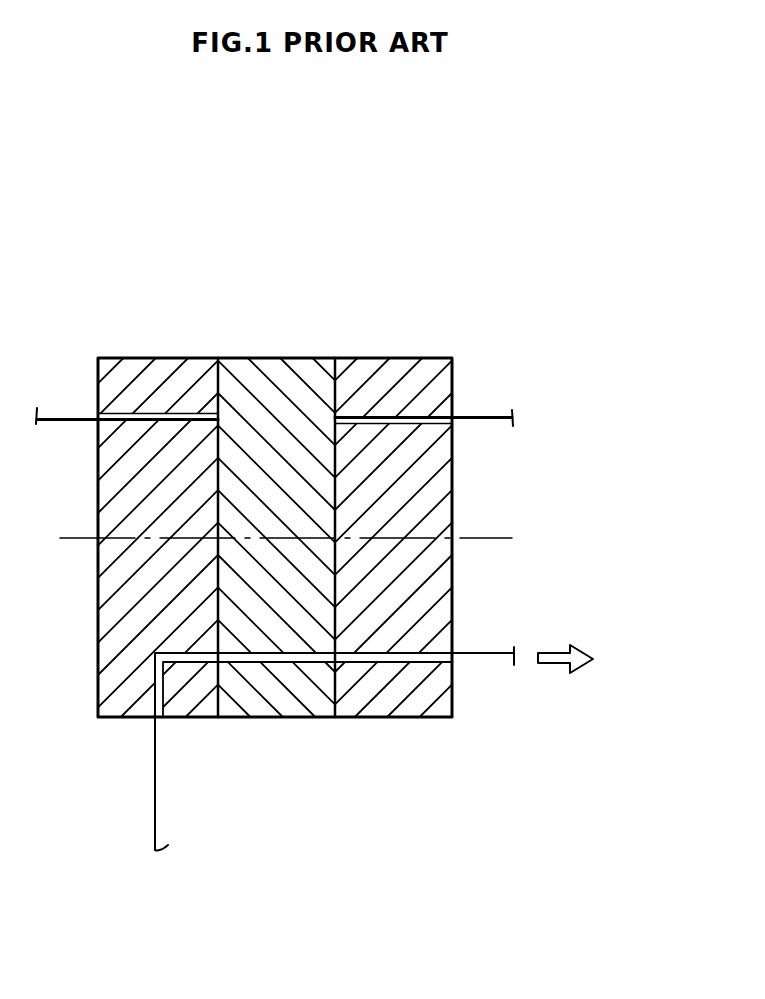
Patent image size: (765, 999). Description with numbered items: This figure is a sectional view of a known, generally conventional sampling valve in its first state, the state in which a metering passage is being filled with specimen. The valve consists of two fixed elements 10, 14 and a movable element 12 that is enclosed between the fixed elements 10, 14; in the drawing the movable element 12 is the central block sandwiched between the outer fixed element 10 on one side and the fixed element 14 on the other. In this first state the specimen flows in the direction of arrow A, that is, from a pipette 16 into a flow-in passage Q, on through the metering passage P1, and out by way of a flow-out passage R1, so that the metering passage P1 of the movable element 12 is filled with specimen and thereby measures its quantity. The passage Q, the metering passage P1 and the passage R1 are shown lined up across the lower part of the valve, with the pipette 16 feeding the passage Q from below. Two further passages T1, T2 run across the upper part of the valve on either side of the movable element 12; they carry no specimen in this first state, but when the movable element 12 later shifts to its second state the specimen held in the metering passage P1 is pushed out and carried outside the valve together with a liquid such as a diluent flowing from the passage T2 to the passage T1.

The fixed element 10 is at (164, 358).
The movable element 12 is at (283, 358).
The fixed element 14 is at (398, 358).
The passage T1 is at (139, 420).
The passage T2 is at (408, 424).
The flow-in passage Q is at (157, 694).
The metering passage P1 is at (278, 662).
The flow-out passage R1 is at (397, 662).
The pipette 16 is at (157, 790).
The arrow A is at (565, 677).